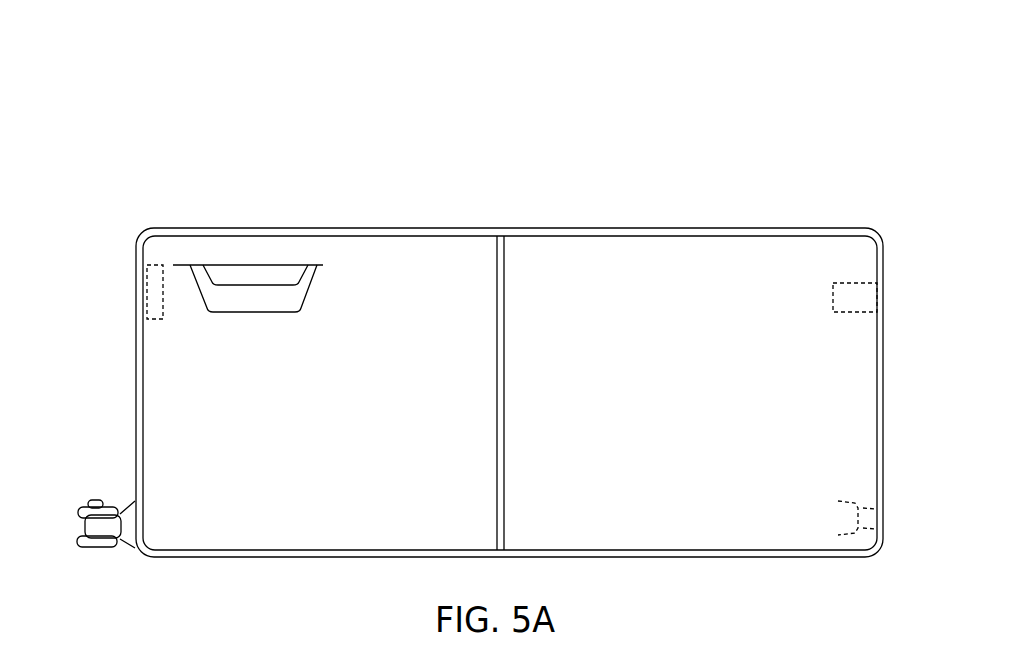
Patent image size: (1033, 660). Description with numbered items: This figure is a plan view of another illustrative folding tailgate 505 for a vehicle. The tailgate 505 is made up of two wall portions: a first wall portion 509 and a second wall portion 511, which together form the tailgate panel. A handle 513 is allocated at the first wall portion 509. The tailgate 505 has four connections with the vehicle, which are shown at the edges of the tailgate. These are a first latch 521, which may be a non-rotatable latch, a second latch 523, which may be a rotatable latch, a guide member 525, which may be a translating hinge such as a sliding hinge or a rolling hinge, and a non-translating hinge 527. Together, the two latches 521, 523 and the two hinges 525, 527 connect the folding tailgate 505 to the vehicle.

The folding tailgate 505 is at (588, 97).
The first wall portion 509 is at (381, 229).
The second wall portion 511 is at (737, 229).
The handle 513 is at (275, 265).
The first latch 521 is at (134, 289).
The second latch 523 is at (880, 293).
The guide member 525 is at (106, 527).
The non-translating hinge 527 is at (880, 508).